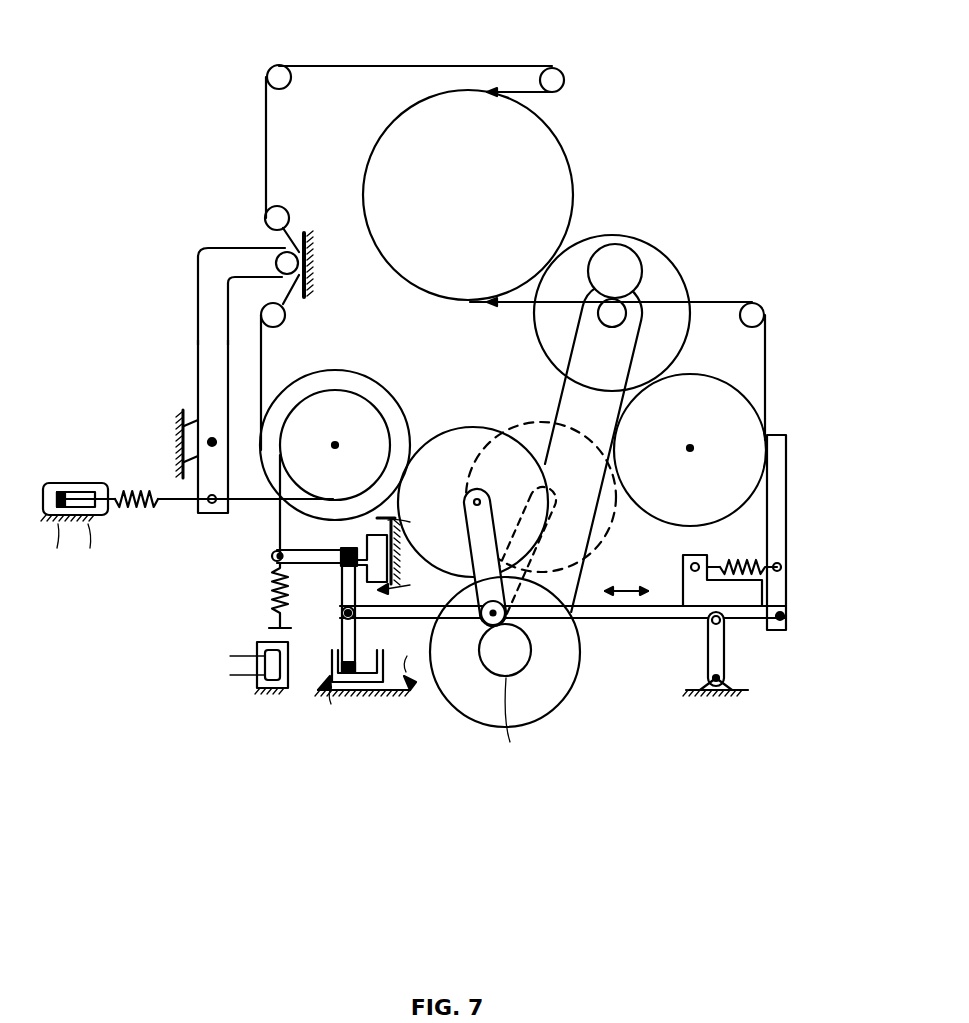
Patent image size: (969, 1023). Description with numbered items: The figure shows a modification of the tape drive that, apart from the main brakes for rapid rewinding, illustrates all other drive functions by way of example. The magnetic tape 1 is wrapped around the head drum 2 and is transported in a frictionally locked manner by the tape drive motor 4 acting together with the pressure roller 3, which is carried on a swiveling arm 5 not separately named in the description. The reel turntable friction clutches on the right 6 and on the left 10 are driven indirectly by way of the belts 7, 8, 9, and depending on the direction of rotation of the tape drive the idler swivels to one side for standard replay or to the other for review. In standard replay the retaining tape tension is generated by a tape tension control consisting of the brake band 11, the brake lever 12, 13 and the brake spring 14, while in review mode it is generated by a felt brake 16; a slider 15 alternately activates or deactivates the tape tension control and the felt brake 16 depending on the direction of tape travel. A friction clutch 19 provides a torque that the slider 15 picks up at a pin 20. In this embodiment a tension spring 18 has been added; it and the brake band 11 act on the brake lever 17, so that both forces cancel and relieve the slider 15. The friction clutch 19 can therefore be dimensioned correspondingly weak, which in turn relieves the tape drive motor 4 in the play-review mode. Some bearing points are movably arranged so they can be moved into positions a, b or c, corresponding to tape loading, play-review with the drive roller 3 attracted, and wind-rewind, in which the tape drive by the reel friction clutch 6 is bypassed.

The magnetic tape 1 is at (425, 65).
The head drum 2 is at (560, 147).
The pressure roller 3 is at (618, 244).
The tape drive motor 4 is at (679, 275).
The arm 5 is at (558, 403).
The reel turntable friction clutch on the right 6 is at (637, 388).
The belt 7 is at (622, 590).
The belt 8 is at (487, 490).
The belt 9 is at (436, 434).
The reel turntable friction clutch on the left 10 is at (337, 370).
The brake band 11 is at (243, 503).
The brake lever 12 is at (198, 320).
The brake lever 13 is at (274, 263).
The brake spring 14 is at (138, 485).
The slider 15 is at (606, 622).
The felt brake 16 is at (787, 542).
The brake band lever 17 is at (338, 584).
The tension spring 18 is at (268, 590).
The friction clutch 19 is at (528, 670).
The pin 20 is at (483, 624).